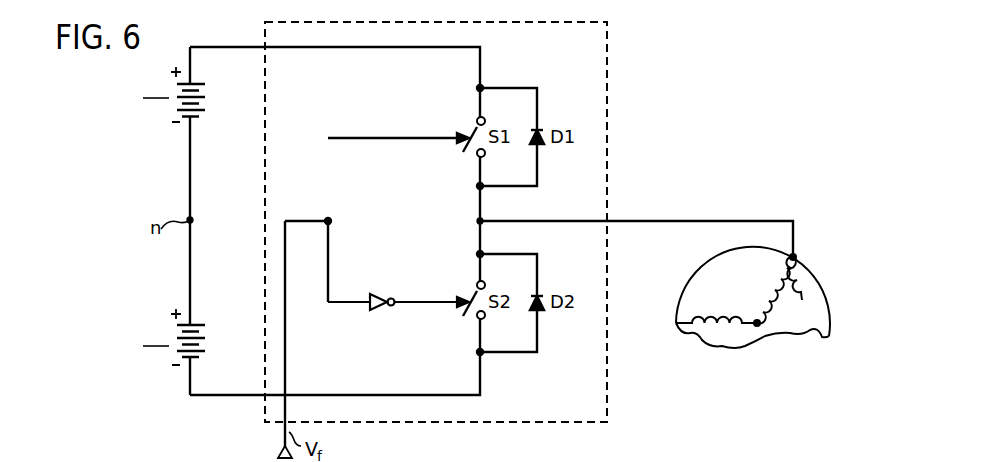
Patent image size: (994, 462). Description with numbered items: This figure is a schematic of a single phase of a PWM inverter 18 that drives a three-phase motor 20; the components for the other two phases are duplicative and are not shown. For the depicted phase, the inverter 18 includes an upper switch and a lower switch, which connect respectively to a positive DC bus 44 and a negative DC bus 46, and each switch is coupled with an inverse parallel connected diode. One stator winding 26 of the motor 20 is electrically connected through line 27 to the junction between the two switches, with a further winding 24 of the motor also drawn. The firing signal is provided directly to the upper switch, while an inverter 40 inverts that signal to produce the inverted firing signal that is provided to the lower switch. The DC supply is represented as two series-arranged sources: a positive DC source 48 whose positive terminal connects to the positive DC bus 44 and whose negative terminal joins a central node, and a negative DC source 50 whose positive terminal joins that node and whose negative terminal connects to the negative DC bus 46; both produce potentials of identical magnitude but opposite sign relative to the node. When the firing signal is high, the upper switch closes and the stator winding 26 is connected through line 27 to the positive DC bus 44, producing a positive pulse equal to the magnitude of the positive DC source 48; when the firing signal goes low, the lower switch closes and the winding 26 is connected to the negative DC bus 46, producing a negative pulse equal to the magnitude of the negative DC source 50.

The inverter 18 is at (608, 63).
The motor 20 is at (768, 275).
The stator winding 24 is at (802, 292).
The stator winding 26 is at (765, 289).
The line 27 is at (681, 220).
The inverter 40 is at (383, 295).
The positive DC bus 44 is at (334, 47).
The negative DC bus 46 is at (372, 394).
The positive DC source 48 is at (193, 85).
The negative DC source 50 is at (193, 325).